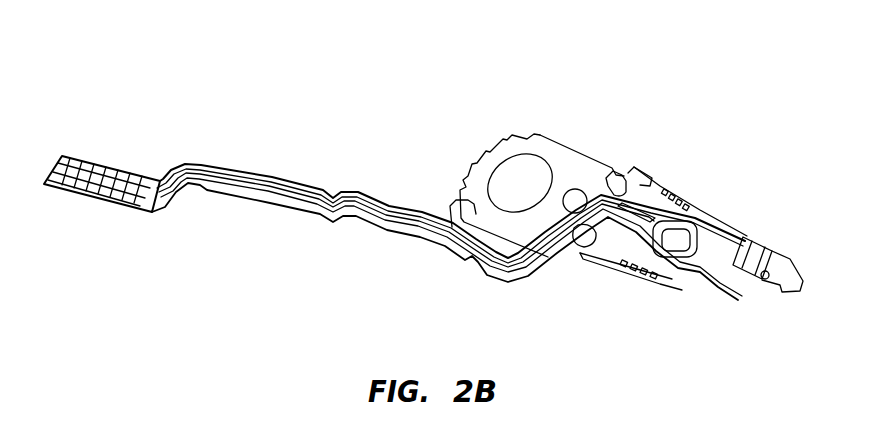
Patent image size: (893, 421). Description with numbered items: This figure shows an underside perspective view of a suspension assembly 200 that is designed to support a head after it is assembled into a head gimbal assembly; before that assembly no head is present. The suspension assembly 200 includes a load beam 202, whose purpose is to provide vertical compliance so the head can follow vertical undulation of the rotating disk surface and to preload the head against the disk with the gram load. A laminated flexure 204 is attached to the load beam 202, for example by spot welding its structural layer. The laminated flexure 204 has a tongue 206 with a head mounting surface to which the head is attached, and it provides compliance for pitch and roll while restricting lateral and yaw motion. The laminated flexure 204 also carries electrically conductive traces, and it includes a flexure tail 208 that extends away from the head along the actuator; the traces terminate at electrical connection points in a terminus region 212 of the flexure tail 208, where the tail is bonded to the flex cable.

The suspension assembly 200 is at (749, 67).
The load beam 202 is at (640, 184).
The laminated flexure 204 is at (672, 272).
The tongue 206 is at (750, 238).
The flexure tail 208 is at (291, 176).
The terminus region 212 is at (100, 198).